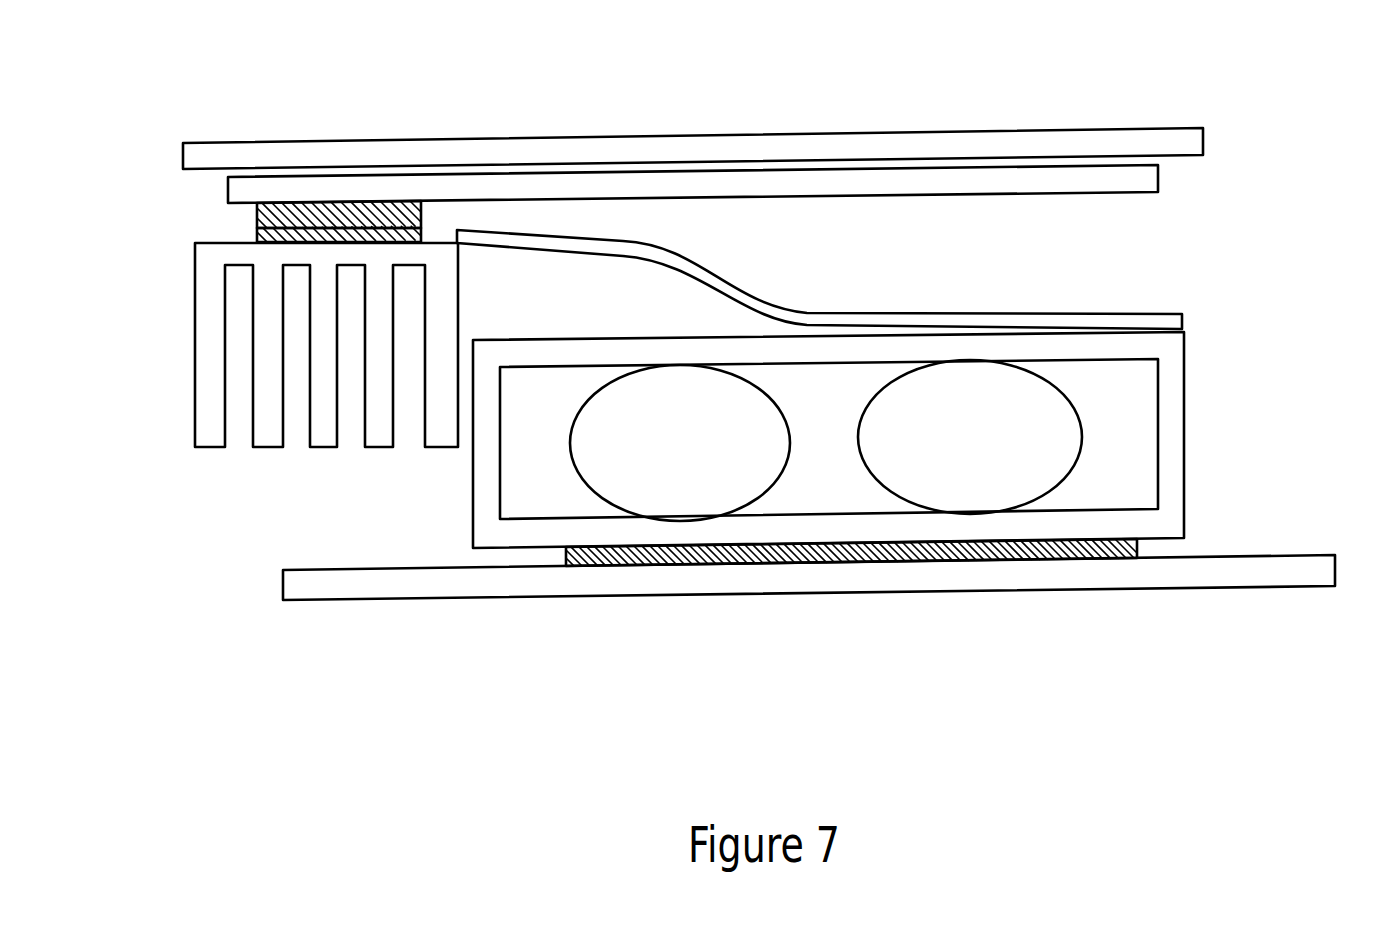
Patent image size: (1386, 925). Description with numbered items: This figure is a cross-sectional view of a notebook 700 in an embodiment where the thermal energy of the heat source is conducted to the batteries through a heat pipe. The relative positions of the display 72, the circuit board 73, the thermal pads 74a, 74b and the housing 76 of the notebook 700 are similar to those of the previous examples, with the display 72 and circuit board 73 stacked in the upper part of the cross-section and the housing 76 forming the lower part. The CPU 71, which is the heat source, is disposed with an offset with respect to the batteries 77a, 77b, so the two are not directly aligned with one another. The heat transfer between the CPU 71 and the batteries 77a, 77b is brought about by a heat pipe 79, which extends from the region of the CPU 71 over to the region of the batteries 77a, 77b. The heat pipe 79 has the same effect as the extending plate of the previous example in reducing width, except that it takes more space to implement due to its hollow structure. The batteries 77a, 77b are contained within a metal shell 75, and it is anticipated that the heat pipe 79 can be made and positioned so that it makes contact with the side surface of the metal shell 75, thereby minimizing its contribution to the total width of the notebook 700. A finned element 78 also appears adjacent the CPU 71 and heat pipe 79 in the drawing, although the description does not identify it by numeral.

The CPU 71 is at (302, 202).
The display 72 is at (960, 143).
The circuit board 73 is at (1053, 183).
The thermal pad 74a is at (403, 220).
The thermal pad 74b is at (1073, 560).
The metal shell 75 is at (1172, 468).
The housing 76 is at (1140, 570).
The battery 77a is at (922, 478).
The battery 77b is at (667, 482).
The heat sink 78 is at (207, 408).
The heat pipe 79 is at (1028, 320).
The notebook 700 is at (1265, 675).